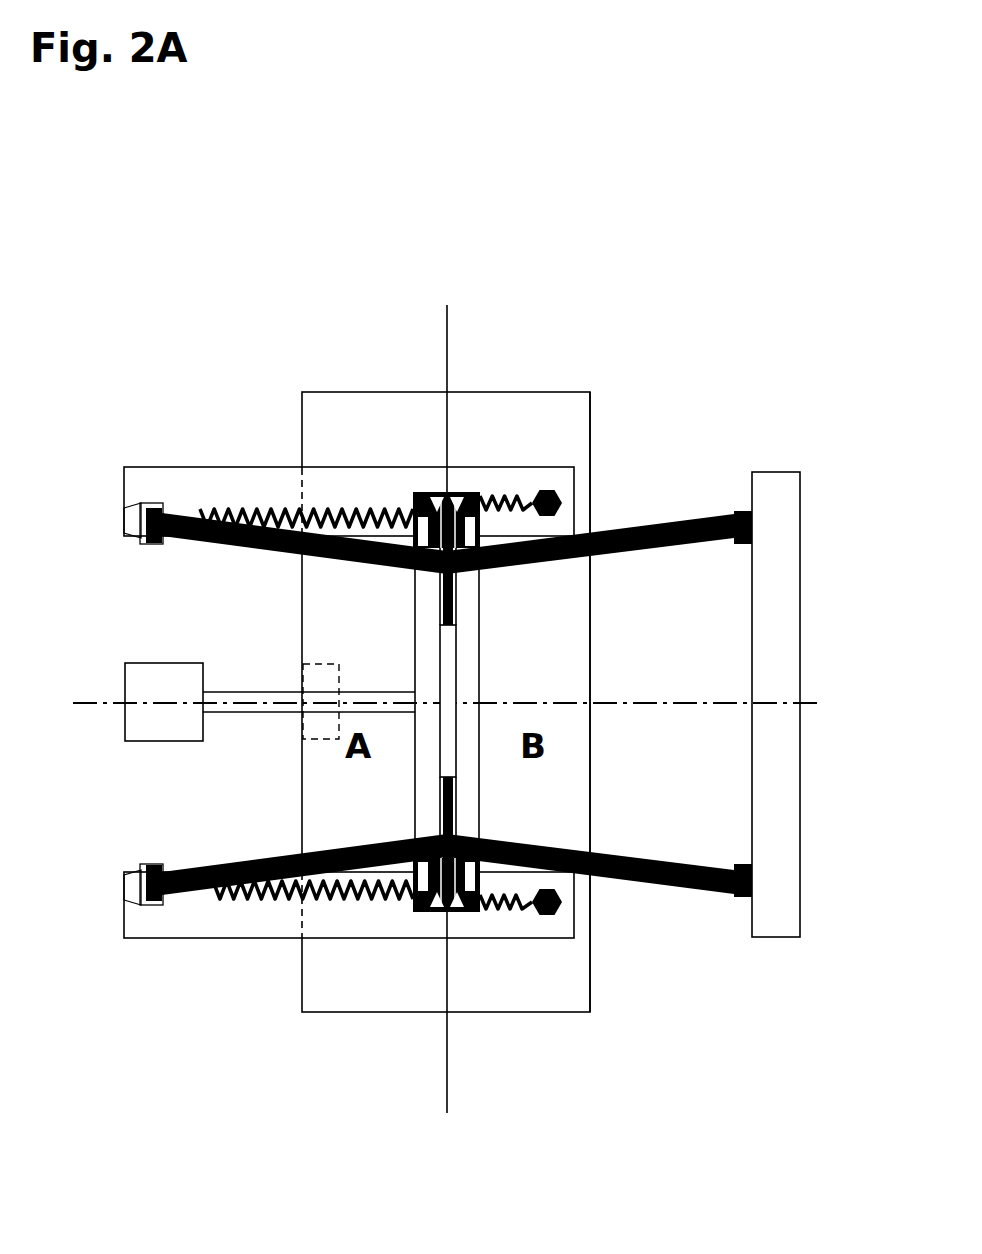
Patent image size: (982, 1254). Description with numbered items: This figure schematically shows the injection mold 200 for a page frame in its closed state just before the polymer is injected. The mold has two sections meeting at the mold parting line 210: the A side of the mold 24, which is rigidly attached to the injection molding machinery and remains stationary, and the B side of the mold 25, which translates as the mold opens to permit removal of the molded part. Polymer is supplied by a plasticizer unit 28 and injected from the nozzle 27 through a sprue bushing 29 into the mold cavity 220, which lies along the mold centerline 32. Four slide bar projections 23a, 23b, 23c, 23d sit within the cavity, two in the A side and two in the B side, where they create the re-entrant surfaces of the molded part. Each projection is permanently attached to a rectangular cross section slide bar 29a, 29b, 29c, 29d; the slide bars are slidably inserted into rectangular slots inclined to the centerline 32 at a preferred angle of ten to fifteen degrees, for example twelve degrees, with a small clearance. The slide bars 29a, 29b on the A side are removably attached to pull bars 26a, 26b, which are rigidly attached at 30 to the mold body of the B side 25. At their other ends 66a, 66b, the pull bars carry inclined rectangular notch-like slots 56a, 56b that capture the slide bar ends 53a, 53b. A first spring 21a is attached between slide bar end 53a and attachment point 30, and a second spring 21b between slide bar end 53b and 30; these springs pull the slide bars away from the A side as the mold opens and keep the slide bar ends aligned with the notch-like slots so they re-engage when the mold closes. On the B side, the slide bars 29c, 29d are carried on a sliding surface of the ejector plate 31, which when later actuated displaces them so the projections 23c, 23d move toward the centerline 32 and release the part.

The injection mold 200 is at (588, 278).
The mold parting line 210 is at (447, 305).
The mold cavity 220 is at (453, 912).
The first spring 21a is at (350, 508).
The second spring 21b is at (343, 895).
The slide bar projection 23a is at (413, 493).
The slide bar projection 23b is at (420, 910).
The slide bar projection 23c is at (478, 493).
The slide bar projection 23d is at (463, 905).
The A side of the mold 24 is at (318, 405).
The B side of the mold 25 is at (553, 412).
The pull bar 26a is at (188, 495).
The pull bar 26b is at (190, 908).
The nozzle 27 is at (227, 703).
The plasticizer unit 28 is at (178, 737).
The sprue bushing 29 is at (340, 676).
The slide bar 29a is at (303, 555).
The slide bar 29b is at (307, 845).
The slide bar 29c is at (658, 547).
The slide bar 29d is at (657, 860).
The pull bar attachment point 30 is at (562, 503).
The ejector plate 31 is at (795, 485).
The mold centerline 32 is at (818, 707).
The slide bar end 53a is at (155, 543).
The slide bar end 53b is at (148, 858).
The inclined rectangular notch-like slot 56a is at (140, 513).
The inclined rectangular notch-like slot 56b is at (140, 898).
The pull bar end 66a is at (132, 483).
The pull bar end 66b is at (132, 920).